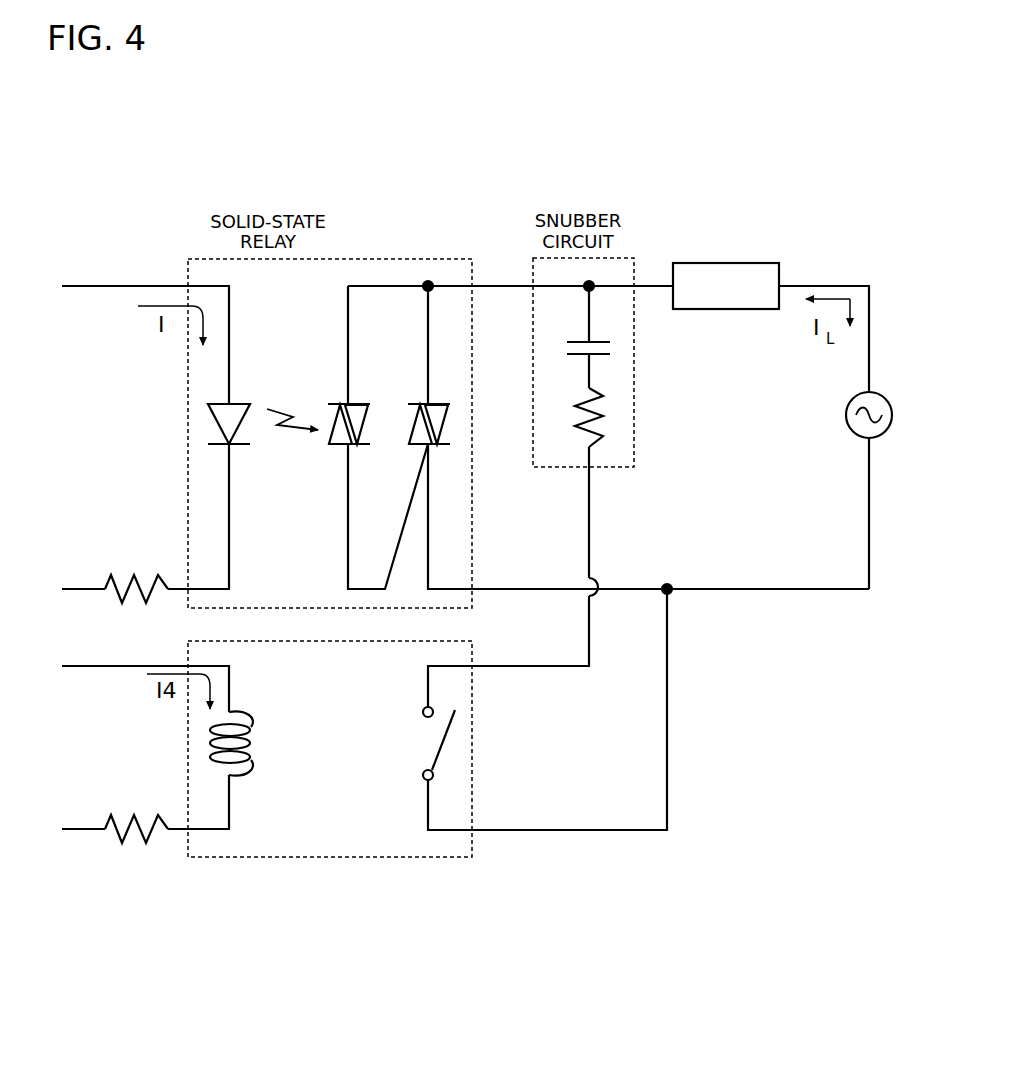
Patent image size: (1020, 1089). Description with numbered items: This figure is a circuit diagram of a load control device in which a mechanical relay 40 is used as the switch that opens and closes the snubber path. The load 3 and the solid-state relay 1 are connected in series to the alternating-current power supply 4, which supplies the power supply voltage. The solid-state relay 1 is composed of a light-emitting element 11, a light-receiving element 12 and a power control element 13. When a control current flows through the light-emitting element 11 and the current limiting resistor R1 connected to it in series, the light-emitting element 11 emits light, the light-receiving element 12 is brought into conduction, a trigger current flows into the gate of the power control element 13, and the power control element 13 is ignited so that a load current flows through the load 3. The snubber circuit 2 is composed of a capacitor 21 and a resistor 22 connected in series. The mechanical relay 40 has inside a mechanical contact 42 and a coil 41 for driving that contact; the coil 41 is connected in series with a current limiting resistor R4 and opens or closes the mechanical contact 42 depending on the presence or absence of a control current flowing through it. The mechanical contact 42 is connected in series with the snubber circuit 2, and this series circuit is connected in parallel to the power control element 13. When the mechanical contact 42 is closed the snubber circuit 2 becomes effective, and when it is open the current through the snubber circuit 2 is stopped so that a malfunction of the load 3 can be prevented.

The solid-state relay 1 is at (333, 258).
The snubber circuit 2 is at (628, 258).
The load 3 is at (755, 261).
The alternating-current power supply 4 is at (846, 415).
The light-emitting element 11 is at (214, 414).
The light-receiving element 12 is at (336, 403).
The power control element 13 is at (417, 403).
The capacitor 21 is at (614, 348).
The resistor 22 is at (606, 410).
The mechanical relay 40 is at (370, 857).
The coil 41 is at (252, 770).
The mechanical contact 42 is at (430, 738).
The current limiting resistor R1 is at (135, 578).
The current limiting resistor R4 is at (138, 818).